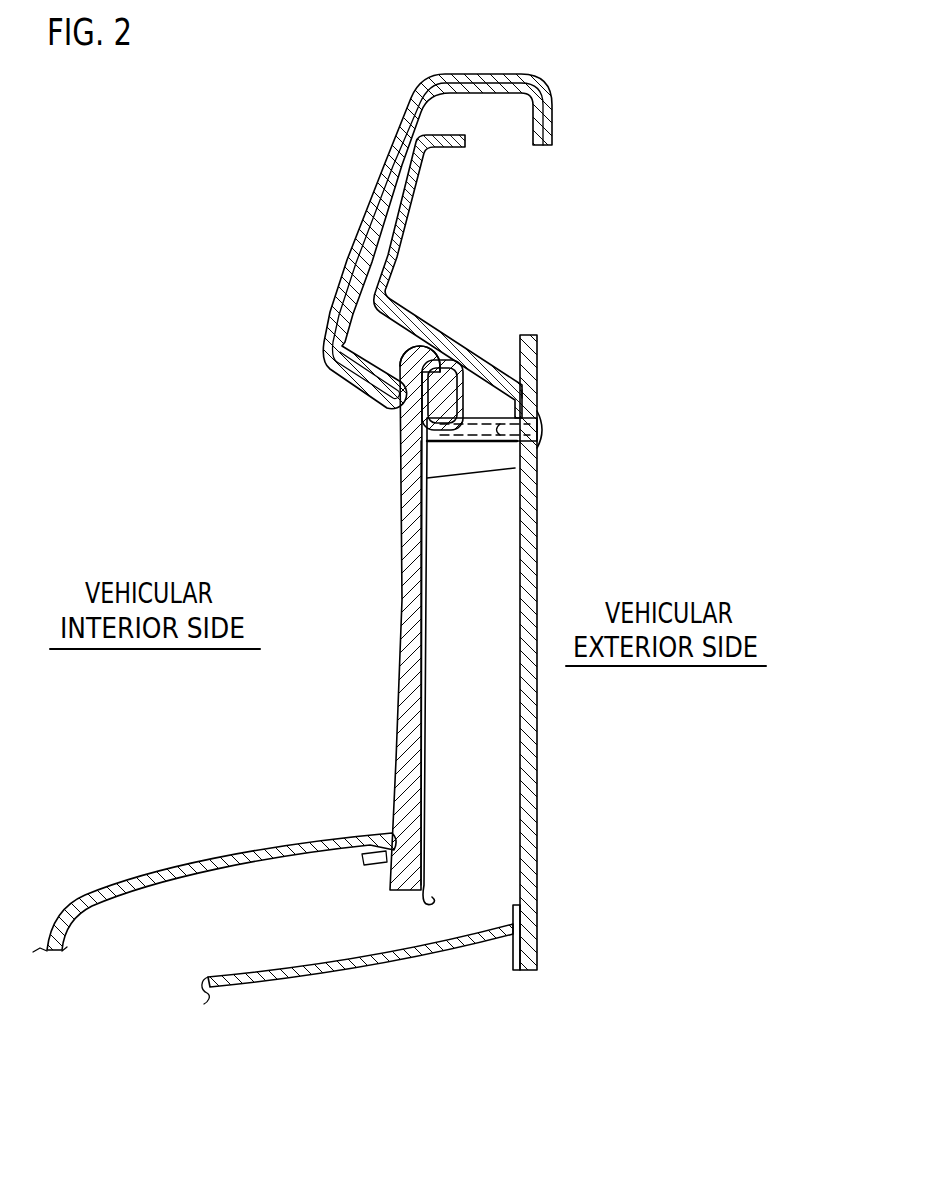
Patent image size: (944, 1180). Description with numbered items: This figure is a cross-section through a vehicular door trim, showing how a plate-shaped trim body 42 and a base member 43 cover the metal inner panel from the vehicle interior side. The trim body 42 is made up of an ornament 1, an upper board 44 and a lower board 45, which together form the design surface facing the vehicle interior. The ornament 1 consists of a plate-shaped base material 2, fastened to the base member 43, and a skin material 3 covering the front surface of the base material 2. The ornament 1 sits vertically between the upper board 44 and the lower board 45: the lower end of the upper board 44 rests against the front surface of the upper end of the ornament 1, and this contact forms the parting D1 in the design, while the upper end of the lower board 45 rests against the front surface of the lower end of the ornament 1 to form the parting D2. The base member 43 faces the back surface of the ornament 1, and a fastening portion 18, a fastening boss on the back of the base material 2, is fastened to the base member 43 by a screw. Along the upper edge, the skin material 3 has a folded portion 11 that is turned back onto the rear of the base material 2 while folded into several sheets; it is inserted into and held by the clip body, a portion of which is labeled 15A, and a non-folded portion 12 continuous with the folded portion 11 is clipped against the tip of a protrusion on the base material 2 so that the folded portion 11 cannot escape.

The ornament 1 is at (406, 576).
The base material 2 is at (431, 640).
The skin material 3 is at (401, 660).
The folded portion 11 is at (448, 366).
The non-folded portion 12 is at (418, 344).
The flange of panel member 15 15A is at (470, 376).
The fastening portion 18 is at (538, 455).
The trim body 42 is at (324, 231).
The base member 43 is at (537, 497).
The upper board 44 is at (377, 181).
The lower board 45 is at (244, 853).
The parting D1 is at (380, 427).
The parting D2 is at (379, 805).